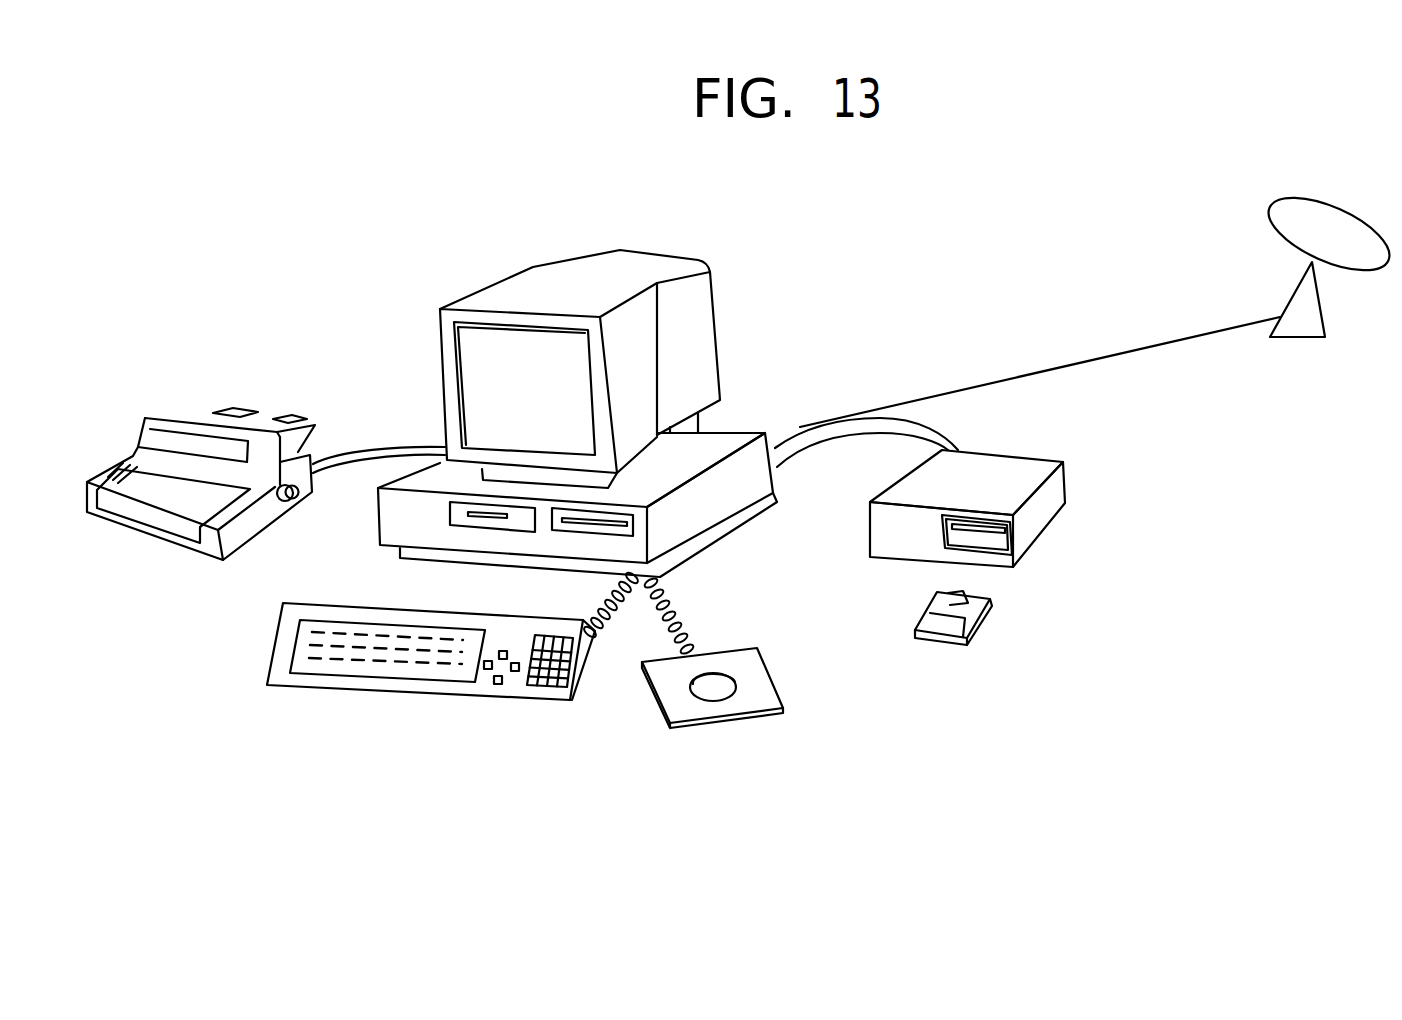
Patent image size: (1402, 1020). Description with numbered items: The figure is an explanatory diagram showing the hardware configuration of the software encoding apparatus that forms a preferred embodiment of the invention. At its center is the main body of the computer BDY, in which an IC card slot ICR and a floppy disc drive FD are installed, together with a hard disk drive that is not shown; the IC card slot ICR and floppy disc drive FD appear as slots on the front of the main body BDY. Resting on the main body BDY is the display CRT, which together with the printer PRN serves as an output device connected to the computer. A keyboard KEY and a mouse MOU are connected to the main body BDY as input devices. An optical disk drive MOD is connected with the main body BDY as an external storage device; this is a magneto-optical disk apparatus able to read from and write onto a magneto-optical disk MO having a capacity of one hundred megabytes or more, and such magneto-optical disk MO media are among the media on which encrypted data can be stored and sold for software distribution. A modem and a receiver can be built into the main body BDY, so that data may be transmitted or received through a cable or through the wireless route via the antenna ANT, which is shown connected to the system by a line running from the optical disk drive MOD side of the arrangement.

The display CRT is at (485, 300).
The main body of the computer BDY is at (395, 527).
The IC card slot ICR is at (492, 517).
The floppy disc drive FD is at (636, 523).
The printer PRN is at (171, 418).
The keyboard KEY is at (280, 670).
The mouse MOU is at (733, 693).
The optical disk drive MOD is at (1050, 498).
The magneto-optical disk MO is at (980, 620).
The antenna ANT is at (1307, 213).